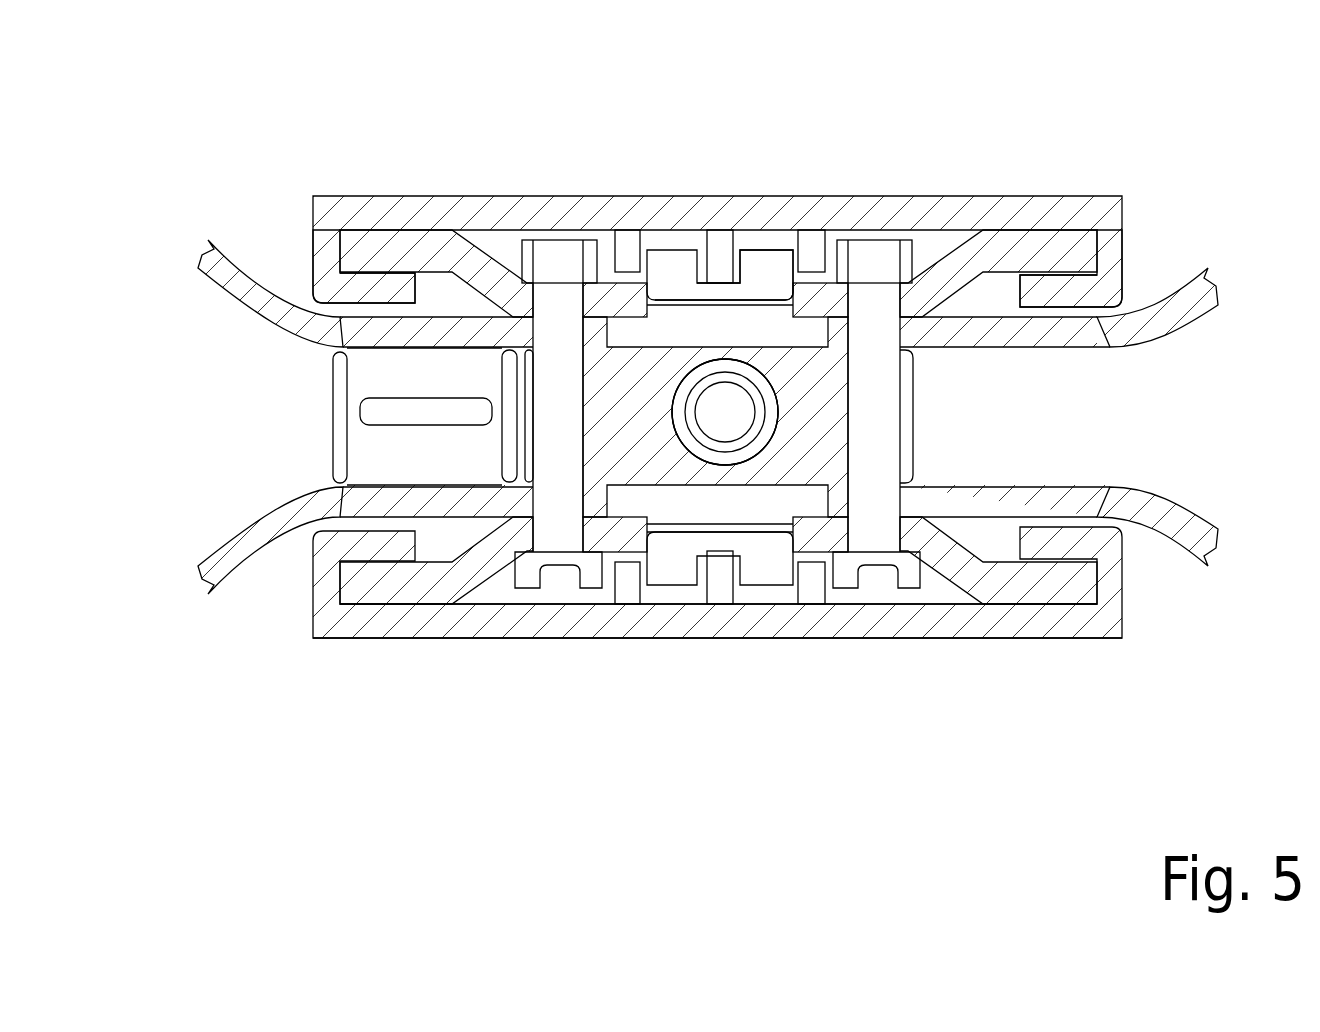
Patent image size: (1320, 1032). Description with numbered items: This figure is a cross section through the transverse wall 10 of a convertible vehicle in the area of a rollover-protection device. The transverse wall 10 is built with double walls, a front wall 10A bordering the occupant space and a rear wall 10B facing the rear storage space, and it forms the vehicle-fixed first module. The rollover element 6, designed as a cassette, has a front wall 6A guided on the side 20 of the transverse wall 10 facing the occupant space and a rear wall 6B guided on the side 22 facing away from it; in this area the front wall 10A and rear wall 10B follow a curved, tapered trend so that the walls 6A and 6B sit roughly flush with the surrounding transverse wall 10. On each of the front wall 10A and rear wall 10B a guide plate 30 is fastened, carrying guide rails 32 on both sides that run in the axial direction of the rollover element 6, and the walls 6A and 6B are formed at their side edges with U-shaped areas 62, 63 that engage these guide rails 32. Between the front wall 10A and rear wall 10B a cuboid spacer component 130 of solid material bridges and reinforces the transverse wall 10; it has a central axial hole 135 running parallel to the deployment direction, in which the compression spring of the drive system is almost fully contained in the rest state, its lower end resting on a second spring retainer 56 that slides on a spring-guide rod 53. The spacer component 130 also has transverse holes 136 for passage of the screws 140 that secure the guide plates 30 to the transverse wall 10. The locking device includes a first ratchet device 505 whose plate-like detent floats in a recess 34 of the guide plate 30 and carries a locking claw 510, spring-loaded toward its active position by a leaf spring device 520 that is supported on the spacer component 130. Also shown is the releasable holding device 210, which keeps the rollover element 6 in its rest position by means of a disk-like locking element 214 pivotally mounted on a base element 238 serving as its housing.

The transverse wall 10 is at (687, 413).
The front wall 10A is at (268, 530).
The rear wall 10B is at (222, 267).
The side facing away from the occupant space 22 is at (1178, 278).
The side facing the occupant space 20 is at (1185, 565).
The rollover element 6 is at (1098, 640).
The front wall of the rollover element 6A is at (965, 615).
The rear wall of the rollover element 6B is at (413, 218).
The U-shaped area 62 is at (330, 215).
The U-shaped area 63 is at (1102, 215).
The guide rail 32 is at (383, 250).
The guide plate 30 is at (960, 238).
The recess 34 is at (753, 422).
The first ratchet device 505 is at (655, 242).
The locking claw 510 is at (762, 275).
The spring device 520 is at (745, 528).
The second spring retainer 56 is at (790, 527).
The spring-guide rod 53 is at (725, 412).
The central axial hole 135 is at (668, 427).
The transverse hole 136 is at (533, 450).
The screw 140 is at (875, 442).
The spacer component 130 is at (907, 385).
The locking element 214 is at (383, 403).
The base element 238 is at (340, 422).
The holding device 210 is at (325, 469).